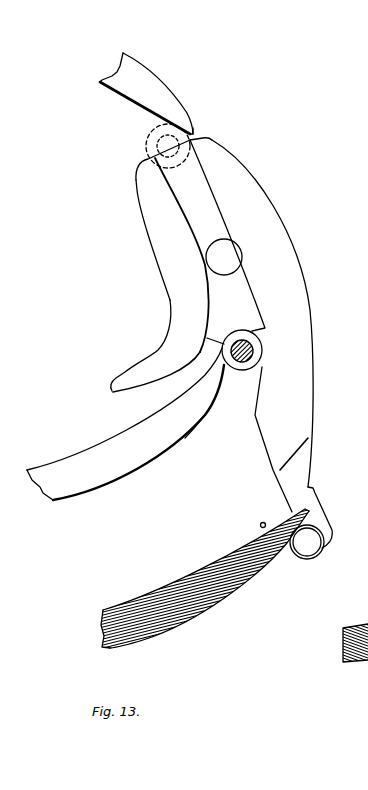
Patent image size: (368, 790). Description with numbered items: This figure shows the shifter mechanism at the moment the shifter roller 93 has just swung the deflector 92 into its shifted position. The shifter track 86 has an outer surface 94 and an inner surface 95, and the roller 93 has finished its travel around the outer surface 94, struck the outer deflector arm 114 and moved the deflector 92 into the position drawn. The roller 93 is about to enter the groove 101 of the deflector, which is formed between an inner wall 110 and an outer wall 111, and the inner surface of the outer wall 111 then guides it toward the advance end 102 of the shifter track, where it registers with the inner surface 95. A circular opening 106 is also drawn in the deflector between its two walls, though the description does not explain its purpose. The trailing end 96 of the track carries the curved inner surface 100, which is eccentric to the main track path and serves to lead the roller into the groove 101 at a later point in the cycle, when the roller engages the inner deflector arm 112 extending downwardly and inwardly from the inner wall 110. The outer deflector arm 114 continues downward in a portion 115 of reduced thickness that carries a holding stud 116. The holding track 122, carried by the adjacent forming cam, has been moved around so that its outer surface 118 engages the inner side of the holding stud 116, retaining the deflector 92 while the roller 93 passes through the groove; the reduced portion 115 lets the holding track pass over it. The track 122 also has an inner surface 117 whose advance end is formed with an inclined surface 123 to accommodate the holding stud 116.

The shifter track 86 is at (114, 76).
The deflector 92 is at (278, 208).
The shifter roller 93 is at (157, 144).
The outer surface 94 is at (148, 73).
The inner surface 95 is at (110, 88).
The trailing end 96 is at (197, 389).
The curved inner surface 100 is at (103, 440).
The groove 101 is at (248, 302).
The advance end 102 is at (190, 121).
The opening 106 is at (230, 252).
The inner wall 110 is at (158, 222).
The outer wall 111 is at (250, 179).
The inner deflector arm 112 is at (145, 363).
The outer deflector arm 114 is at (297, 410).
The portion of reduced thickness 115 is at (298, 474).
The holding stud 116 is at (308, 548).
The inner surface 117 is at (172, 581).
The outer surface 118 is at (210, 602).
The holding track 122 is at (222, 562).
The inclined surface 123 is at (266, 528).